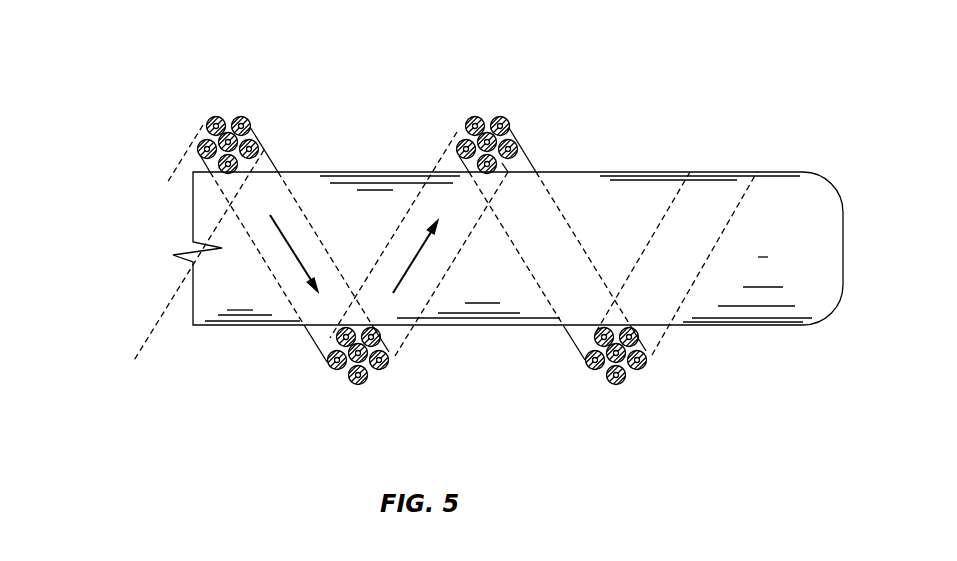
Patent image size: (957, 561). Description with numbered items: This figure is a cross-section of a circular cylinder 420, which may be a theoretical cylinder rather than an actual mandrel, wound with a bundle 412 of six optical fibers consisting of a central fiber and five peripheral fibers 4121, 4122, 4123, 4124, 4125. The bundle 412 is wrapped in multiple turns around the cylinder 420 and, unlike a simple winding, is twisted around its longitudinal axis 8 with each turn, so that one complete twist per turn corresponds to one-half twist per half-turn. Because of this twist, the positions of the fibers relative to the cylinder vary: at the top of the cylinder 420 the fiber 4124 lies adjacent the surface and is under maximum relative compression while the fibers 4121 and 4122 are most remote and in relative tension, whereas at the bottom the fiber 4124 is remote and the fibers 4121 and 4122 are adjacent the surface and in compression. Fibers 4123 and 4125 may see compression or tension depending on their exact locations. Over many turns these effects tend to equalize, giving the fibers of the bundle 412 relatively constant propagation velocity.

The bundle of optical fibers 412 is at (266, 56).
The peripheral optical fiber 4121 is at (596, 343).
The peripheral optical fiber 4122 is at (244, 116).
The peripheral optical fiber 4123 is at (262, 143).
The peripheral optical fiber 4124 is at (610, 407).
The peripheral optical fiber 4125 is at (586, 365).
The circular cylinder 420 is at (792, 172).
The longitudinal axis 8 is at (295, 253).